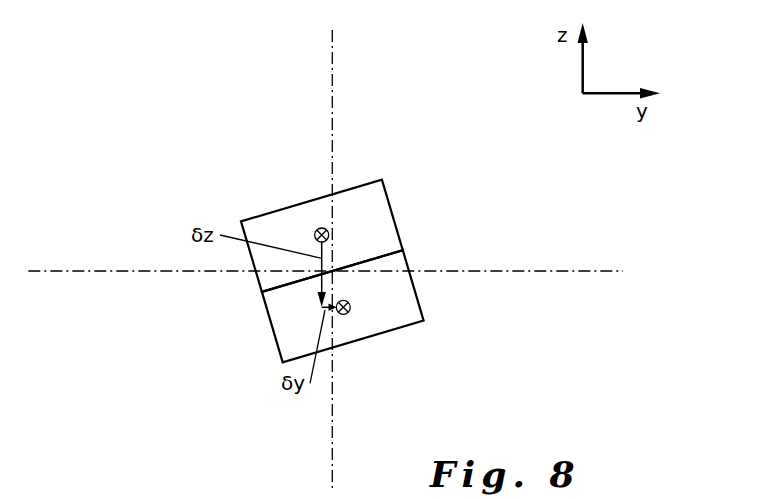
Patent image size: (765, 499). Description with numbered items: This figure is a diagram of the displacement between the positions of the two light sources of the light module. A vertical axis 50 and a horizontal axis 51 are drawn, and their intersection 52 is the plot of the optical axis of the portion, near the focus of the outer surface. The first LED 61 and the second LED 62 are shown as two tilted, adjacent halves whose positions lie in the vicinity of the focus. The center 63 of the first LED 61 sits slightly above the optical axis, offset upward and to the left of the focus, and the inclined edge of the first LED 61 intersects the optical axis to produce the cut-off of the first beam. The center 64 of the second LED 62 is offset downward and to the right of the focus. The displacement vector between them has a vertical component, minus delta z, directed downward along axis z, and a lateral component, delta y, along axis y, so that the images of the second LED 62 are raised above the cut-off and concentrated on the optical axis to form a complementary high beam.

The vertical axis 50 is at (332, 57).
The horizontal axis 51 is at (562, 270).
The intersection 52 is at (333, 273).
The first LED 61 is at (386, 195).
The second LED 62 is at (418, 302).
The center of the first LED 63 is at (317, 230).
The center of the second light source 64 is at (348, 312).